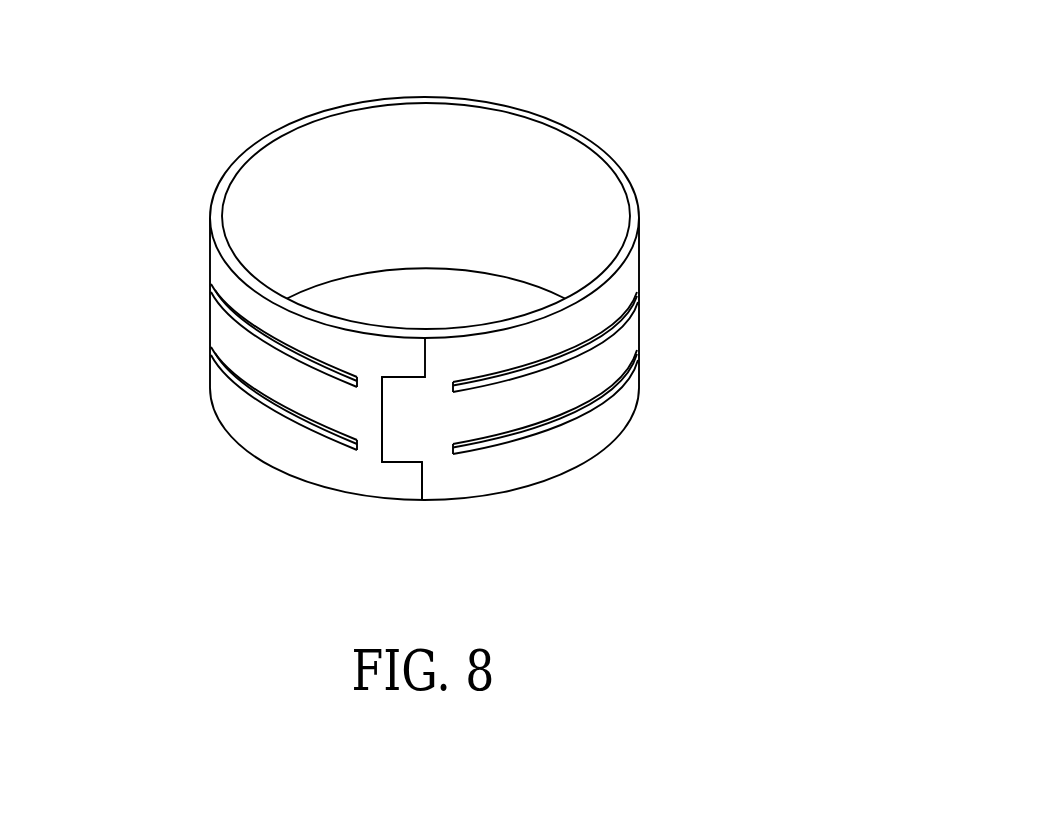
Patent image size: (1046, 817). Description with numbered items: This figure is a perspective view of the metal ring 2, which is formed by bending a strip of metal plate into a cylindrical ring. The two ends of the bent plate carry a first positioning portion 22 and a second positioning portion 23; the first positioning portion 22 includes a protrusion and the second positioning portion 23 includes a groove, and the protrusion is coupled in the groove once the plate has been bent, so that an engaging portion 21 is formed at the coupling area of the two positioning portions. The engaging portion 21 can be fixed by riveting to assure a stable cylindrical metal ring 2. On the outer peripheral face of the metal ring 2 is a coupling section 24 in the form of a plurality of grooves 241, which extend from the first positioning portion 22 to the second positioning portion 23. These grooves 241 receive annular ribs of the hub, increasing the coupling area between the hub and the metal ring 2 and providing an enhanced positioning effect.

The metal ring 2 is at (488, 291).
The engaging portion 21 is at (359, 460).
The first positioning portion 22 is at (403, 442).
The second positioning portion 23 is at (374, 463).
The coupling section 24 is at (488, 393).
The grooves 241 is at (592, 348).